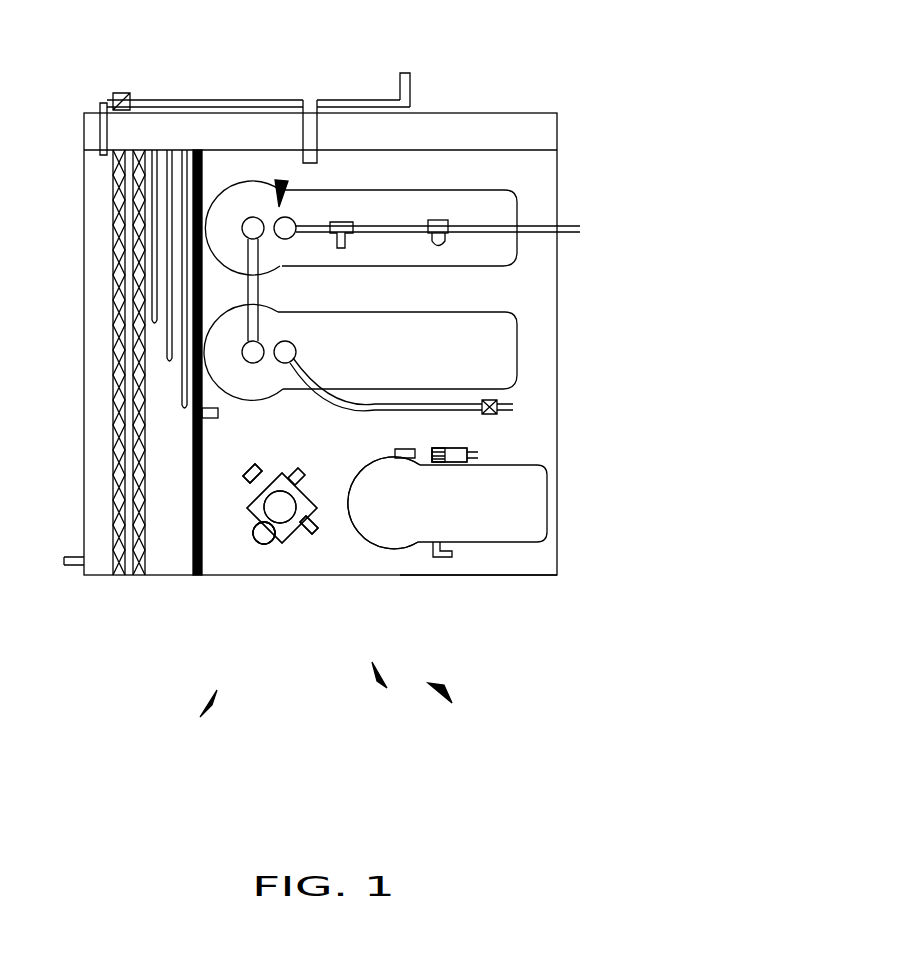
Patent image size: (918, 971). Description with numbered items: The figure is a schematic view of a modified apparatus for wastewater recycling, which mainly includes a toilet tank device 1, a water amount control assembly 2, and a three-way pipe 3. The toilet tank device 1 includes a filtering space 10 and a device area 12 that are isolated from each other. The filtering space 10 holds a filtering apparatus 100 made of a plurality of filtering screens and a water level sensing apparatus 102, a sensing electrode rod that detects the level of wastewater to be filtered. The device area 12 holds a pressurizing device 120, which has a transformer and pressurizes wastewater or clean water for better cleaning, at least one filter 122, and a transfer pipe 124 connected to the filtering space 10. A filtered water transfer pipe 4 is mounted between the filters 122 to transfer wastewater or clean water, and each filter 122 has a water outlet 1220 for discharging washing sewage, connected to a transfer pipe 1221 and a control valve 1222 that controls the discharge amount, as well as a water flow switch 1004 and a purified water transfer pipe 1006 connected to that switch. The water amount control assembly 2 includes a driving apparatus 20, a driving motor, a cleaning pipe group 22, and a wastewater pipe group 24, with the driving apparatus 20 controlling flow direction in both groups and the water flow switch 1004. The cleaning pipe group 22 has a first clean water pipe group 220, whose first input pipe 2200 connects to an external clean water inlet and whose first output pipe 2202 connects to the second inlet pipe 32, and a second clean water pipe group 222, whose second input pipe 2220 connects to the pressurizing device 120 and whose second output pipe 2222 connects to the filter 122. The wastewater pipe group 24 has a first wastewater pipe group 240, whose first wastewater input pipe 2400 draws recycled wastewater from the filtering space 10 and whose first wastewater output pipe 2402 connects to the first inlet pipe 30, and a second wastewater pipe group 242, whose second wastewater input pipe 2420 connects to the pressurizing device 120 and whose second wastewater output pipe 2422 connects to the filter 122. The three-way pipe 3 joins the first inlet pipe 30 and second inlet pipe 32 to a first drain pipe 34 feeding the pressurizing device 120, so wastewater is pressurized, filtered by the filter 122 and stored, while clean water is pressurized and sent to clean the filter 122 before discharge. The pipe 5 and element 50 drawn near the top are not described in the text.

The toilet tank device 1 is at (338, 133).
The filtering space 10 is at (105, 563).
The device area 12 is at (463, 560).
The water inlet pipe 5 is at (100, 106).
The inlet valve 50 is at (112, 95).
The filtering apparatus 100 is at (120, 332).
The water level sensing apparatus 102 is at (247, 87).
The transfer pipe 124 is at (197, 413).
The filtered water transfer pipe 4 is at (280, 180).
The filter 122 is at (437, 197).
The transfer pipe 1221 is at (450, 404).
The control valve 1222 is at (498, 400).
The water outlet 1220 is at (512, 412).
The water flow switch 1004 is at (440, 228).
The purified water transfer pipe 1006 is at (342, 228).
The pressurizing device 120 is at (502, 547).
The water amount control assembly 2 is at (445, 698).
The first inlet pipe 30 is at (440, 449).
The three-way pipe 3 is at (458, 463).
The second inlet pipe 32 is at (478, 455).
The first drain pipe 34 is at (435, 463).
The wastewater pipe group 24 is at (207, 708).
The cleaning pipe group 22 is at (380, 688).
The driving apparatus 20 is at (298, 535).
The first clean water pipe group 220 is at (308, 545).
The first input pipe 2200 is at (320, 524).
The first output pipe 2202 is at (318, 545).
The second clean water pipe group 222 is at (268, 480).
The second input pipe 2220 is at (262, 490).
The second output pipe 2222 is at (250, 474).
The first wastewater pipe group 240 is at (300, 480).
The first wastewater input pipe 2400 is at (286, 474).
The first wastewater output pipe 2402 is at (325, 478).
The second wastewater pipe group 242 is at (260, 543).
The second wastewater input pipe 2420 is at (275, 545).
The second wastewater output pipe 2422 is at (254, 538).